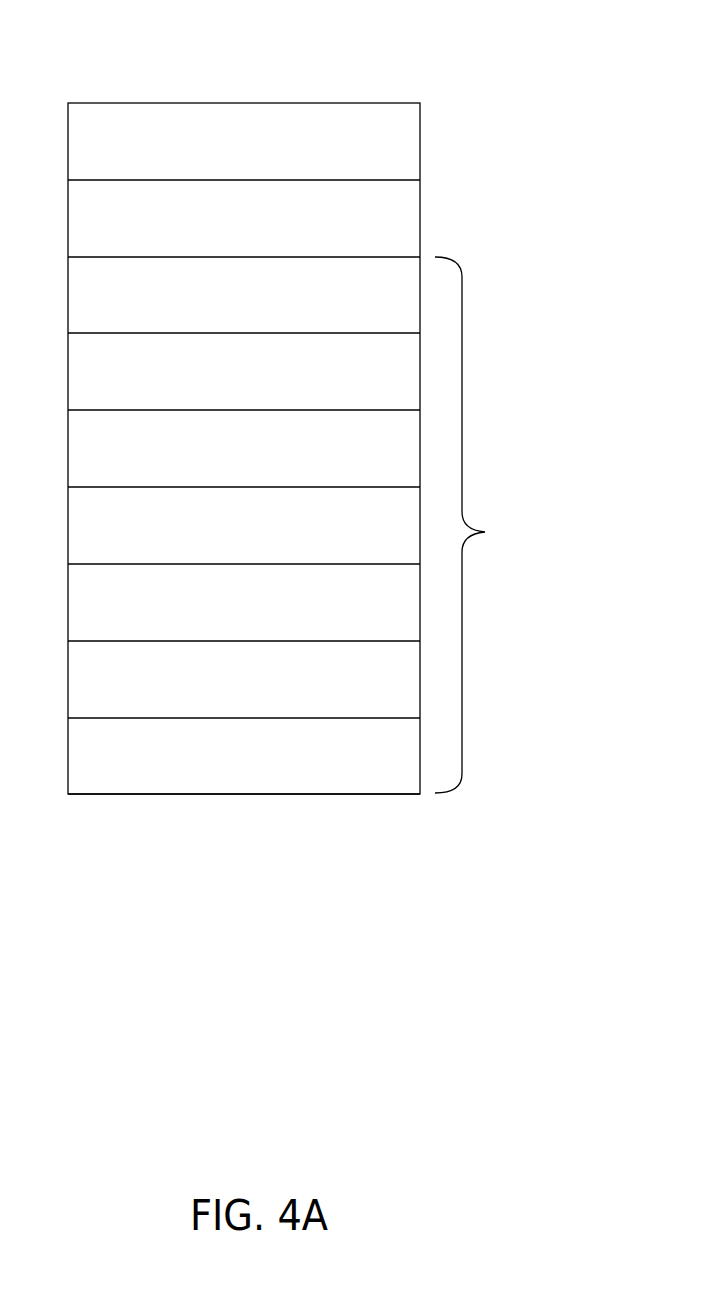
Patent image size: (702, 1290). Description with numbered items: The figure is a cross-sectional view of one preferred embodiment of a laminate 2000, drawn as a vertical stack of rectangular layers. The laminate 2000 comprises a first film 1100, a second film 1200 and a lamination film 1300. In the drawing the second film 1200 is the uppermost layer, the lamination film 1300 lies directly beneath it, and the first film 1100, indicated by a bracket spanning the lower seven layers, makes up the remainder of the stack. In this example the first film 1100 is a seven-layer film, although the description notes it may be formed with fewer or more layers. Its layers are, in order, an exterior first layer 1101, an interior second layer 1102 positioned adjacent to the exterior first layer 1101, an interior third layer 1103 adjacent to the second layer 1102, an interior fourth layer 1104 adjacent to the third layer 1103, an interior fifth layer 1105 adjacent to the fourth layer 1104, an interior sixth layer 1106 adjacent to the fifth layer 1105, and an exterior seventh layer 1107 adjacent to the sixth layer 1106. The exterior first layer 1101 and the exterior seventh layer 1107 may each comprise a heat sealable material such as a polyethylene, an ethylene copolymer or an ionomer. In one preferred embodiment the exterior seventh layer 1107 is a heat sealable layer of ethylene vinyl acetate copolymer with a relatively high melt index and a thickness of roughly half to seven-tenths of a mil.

The laminate 2000 is at (212, 37).
The second film 1200 is at (244, 155).
The lamination film 1300 is at (244, 232).
The first film 1100 is at (485, 532).
The exterior first layer 1101 is at (244, 309).
The interior second layer 1102 is at (244, 386).
The interior third layer 1103 is at (244, 463).
The interior fourth layer 1104 is at (244, 540).
The interior fifth layer 1105 is at (244, 617).
The interior sixth layer 1106 is at (244, 694).
The exterior seventh layer 1107 is at (244, 770).